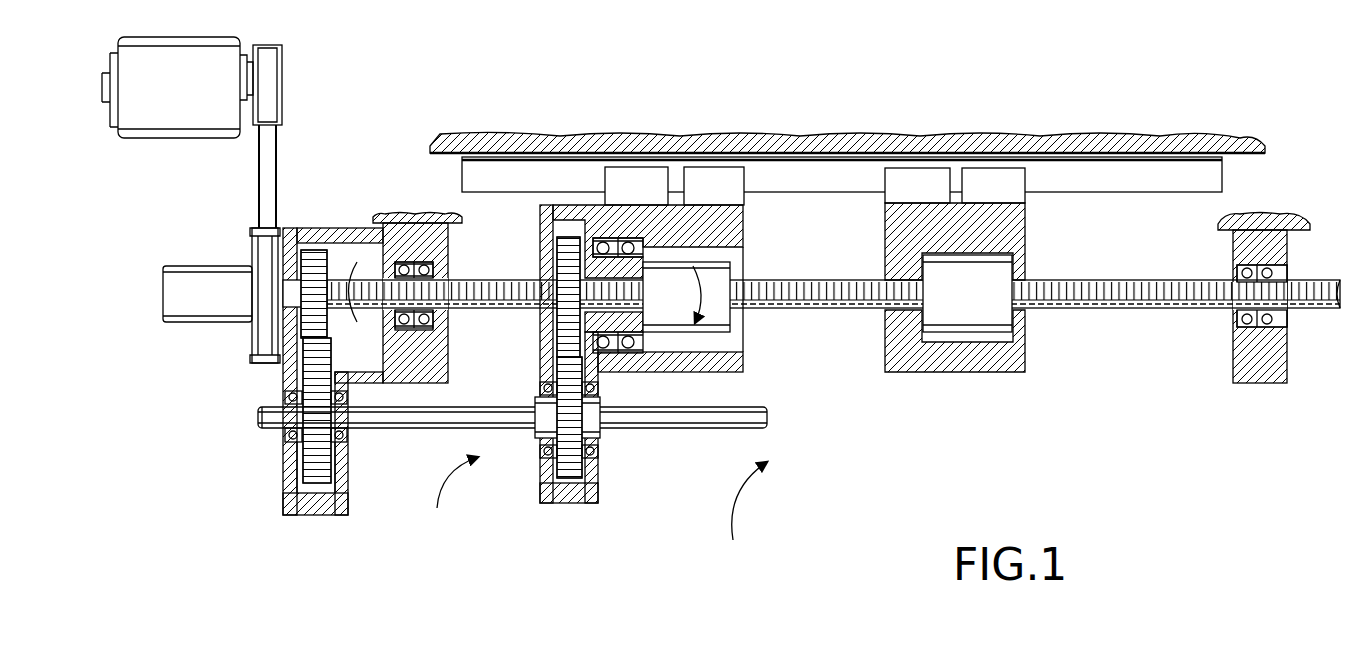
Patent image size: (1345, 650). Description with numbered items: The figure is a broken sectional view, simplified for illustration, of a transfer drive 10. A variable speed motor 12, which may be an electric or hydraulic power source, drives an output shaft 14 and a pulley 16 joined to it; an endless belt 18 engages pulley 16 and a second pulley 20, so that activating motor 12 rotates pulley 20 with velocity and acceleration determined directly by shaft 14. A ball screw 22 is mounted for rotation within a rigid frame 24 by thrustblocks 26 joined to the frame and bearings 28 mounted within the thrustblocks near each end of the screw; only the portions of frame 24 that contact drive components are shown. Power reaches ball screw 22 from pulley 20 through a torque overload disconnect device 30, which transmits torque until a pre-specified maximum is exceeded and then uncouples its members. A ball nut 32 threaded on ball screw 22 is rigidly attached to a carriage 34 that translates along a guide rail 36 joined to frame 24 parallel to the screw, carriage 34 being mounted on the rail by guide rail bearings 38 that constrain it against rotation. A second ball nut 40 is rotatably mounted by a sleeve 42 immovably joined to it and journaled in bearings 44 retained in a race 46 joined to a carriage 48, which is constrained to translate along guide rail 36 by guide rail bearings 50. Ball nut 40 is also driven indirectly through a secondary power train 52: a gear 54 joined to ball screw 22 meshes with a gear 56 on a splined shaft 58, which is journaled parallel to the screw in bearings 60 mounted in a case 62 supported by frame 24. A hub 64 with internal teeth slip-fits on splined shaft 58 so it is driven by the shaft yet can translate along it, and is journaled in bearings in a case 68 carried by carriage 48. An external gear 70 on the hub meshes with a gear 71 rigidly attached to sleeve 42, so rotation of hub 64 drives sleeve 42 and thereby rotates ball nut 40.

The transfer drive 10 is at (749, 507).
The variable speed motor 12 is at (149, 132).
The output shaft 14 is at (245, 83).
The pulley 16 is at (284, 92).
The endless belt 18 is at (262, 172).
The pulley 20 is at (258, 242).
The ball screw 22 is at (487, 302).
The rigid frame 24 is at (470, 134).
The thrustblocks 26 is at (440, 378).
The bearings 28 is at (434, 272).
The torque overload disconnect device 30 is at (176, 318).
The ball nut 32 is at (960, 320).
The carriage 34 is at (890, 243).
The guide rail 36 is at (815, 160).
The guide rail bearings 38 is at (990, 178).
The ball nut 40 is at (718, 318).
The sleeve 42 is at (673, 294).
The bearings 44 is at (600, 240).
The race 46 is at (628, 240).
The carriage 48 is at (745, 228).
The guide rail bearings 50 is at (715, 170).
The secondary power train 52 is at (450, 500).
The gear 54 is at (314, 250).
The gear 56 is at (316, 486).
The splined shaft 58 is at (400, 417).
The bearings 60 is at (285, 398).
The case 62 is at (327, 508).
The hub 64 is at (585, 405).
The case 68 is at (598, 490).
The external gear 70 is at (568, 480).
The gear 71 is at (560, 240).